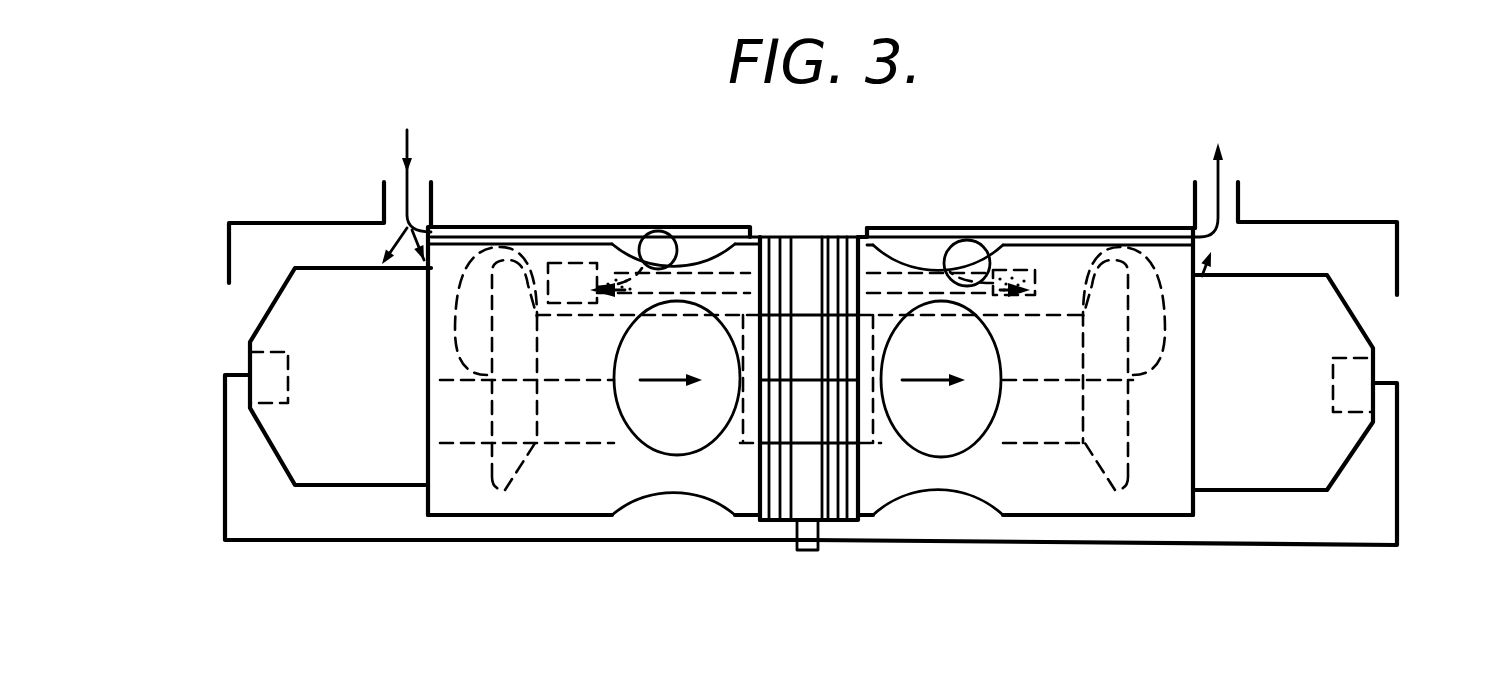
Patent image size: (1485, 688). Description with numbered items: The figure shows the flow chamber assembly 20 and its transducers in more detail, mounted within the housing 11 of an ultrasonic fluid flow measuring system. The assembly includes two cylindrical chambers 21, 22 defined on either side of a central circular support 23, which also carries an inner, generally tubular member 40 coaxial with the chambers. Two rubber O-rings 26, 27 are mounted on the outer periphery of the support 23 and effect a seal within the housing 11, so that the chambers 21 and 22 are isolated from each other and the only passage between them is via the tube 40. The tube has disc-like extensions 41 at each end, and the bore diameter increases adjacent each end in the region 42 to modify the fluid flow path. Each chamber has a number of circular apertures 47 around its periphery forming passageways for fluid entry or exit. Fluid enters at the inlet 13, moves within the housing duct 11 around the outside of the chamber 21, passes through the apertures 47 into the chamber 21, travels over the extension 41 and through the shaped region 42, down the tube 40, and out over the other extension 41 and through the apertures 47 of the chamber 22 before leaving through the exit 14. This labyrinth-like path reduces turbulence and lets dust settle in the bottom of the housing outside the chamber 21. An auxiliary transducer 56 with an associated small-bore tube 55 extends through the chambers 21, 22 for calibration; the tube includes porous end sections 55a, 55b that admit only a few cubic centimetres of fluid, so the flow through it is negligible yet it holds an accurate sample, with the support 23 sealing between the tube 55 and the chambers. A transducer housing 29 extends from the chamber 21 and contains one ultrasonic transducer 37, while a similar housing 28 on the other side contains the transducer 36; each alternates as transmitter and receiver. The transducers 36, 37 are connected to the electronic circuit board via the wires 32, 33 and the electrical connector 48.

The housing 11 is at (933, 228).
The inlet 13 is at (384, 195).
The exit 14 is at (1240, 197).
The flow chamber assembly 20 is at (706, 519).
The cylindrical chamber 21 is at (473, 512).
The cylindrical chamber 22 is at (1137, 517).
The central circular support 23 is at (857, 477).
The O-ring 26 is at (775, 237).
The O-ring 27 is at (840, 238).
The transducer housing 28 is at (1275, 478).
The transducer housing 29 is at (365, 470).
The wire 32 is at (225, 482).
The wire 33 is at (1400, 488).
The ultrasonic transducer 36 is at (1362, 378).
The ultrasonic transducer 37 is at (270, 362).
The tubular member 40 is at (655, 440).
The disc-like extension 41 is at (520, 515).
The region 42 is at (440, 440).
The circular aperture 47 is at (650, 232).
The electrical connector 48 is at (805, 550).
The tube 55 is at (993, 225).
The porous end section 55a is at (677, 378).
The porous end section 55b is at (941, 379).
The auxiliary transducer 56 is at (575, 262).